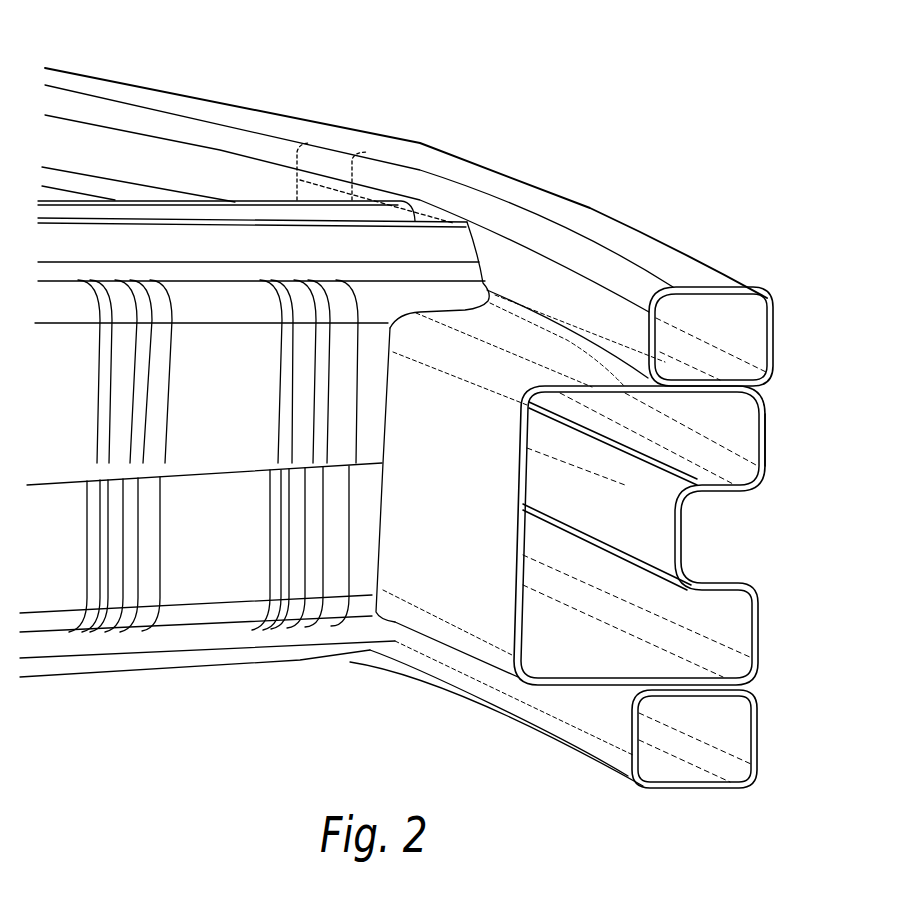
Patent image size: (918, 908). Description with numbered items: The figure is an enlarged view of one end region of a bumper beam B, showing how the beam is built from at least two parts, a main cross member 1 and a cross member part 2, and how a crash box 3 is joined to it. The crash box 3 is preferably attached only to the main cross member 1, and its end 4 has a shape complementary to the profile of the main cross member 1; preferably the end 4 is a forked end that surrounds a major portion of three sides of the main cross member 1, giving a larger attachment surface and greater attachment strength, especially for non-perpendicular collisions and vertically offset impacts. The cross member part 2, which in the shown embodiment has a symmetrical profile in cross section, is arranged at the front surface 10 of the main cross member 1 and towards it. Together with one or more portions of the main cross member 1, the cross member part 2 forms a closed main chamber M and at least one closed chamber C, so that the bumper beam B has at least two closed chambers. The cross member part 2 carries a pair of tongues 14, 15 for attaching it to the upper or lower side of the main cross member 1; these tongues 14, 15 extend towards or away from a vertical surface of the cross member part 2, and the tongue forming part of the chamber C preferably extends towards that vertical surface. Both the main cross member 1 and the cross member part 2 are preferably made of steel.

The main cross member 1 is at (470, 590).
The cross member part 2 is at (757, 483).
The crash box 3 is at (233, 578).
The end 4 is at (448, 277).
The front surface 10 is at (763, 426).
The tongue 14 is at (718, 373).
The tongue 15 is at (688, 690).
The bumper beam B is at (438, 112).
The closed chamber C is at (706, 528).
The closed main chamber M is at (610, 496).